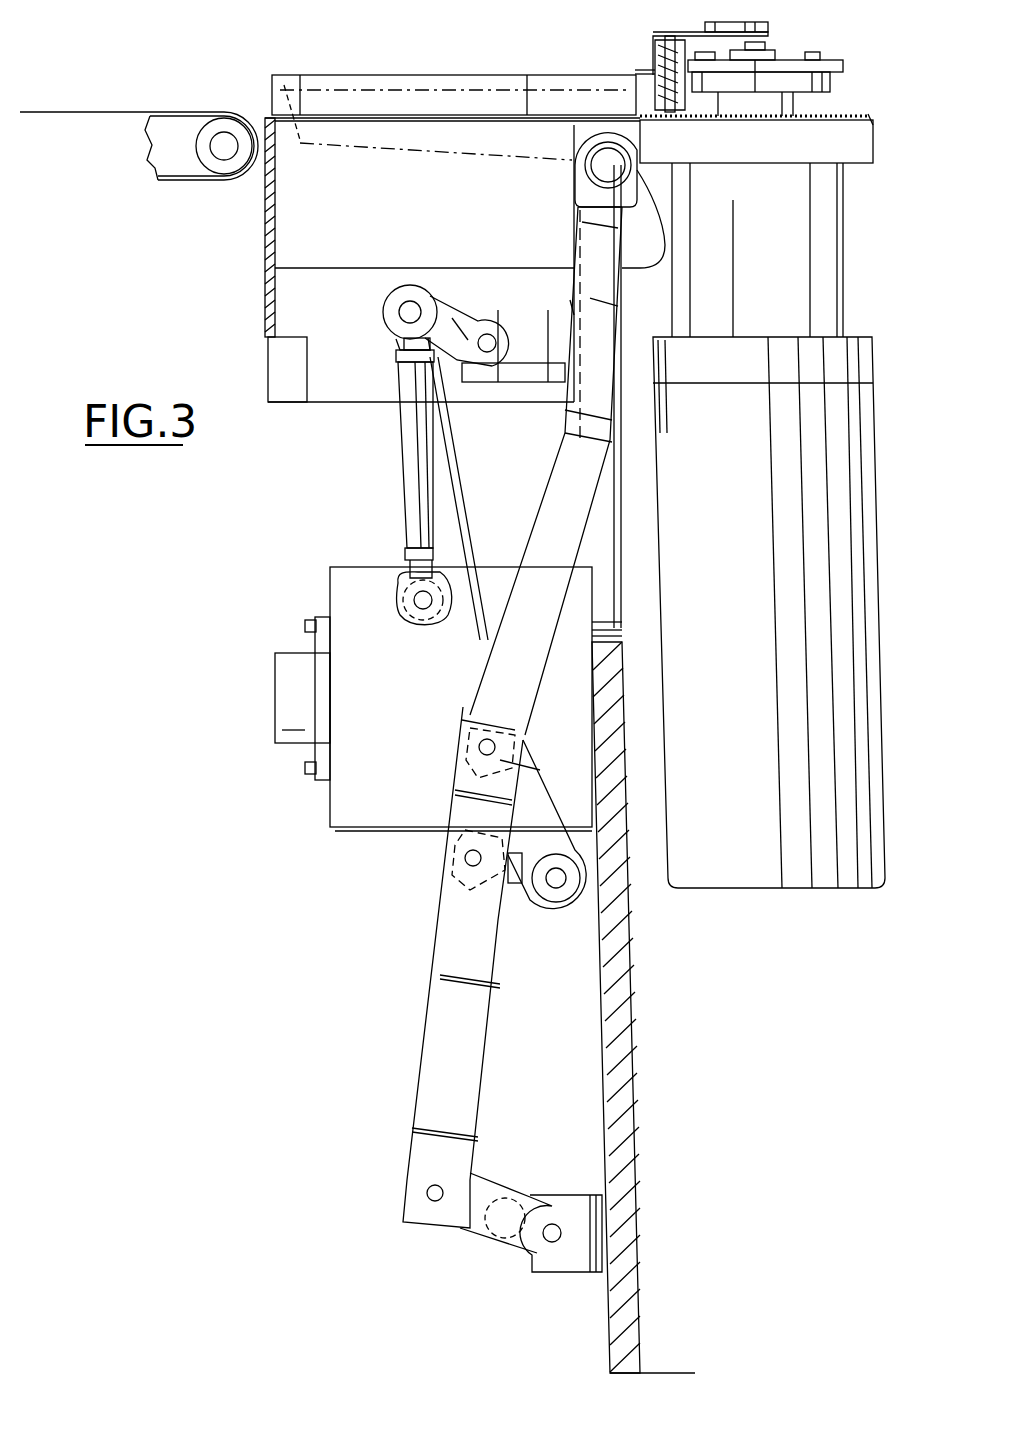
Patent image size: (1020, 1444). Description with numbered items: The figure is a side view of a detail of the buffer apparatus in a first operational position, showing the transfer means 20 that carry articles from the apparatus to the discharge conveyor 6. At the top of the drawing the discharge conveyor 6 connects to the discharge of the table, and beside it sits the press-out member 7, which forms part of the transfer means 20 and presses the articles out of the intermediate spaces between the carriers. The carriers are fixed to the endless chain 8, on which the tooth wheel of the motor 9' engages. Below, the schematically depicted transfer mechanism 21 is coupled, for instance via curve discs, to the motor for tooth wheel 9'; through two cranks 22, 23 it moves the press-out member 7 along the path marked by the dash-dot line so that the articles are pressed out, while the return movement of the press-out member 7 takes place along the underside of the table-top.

The discharge conveyor 6 is at (171, 110).
The press-out member 7 is at (640, 160).
The chain 8 is at (650, 62).
The motor 9' is at (780, 67).
The transfer means 20 is at (300, 572).
The transfer mechanism 21 is at (397, 830).
The crank 22 is at (440, 636).
The crank 23 is at (540, 793).